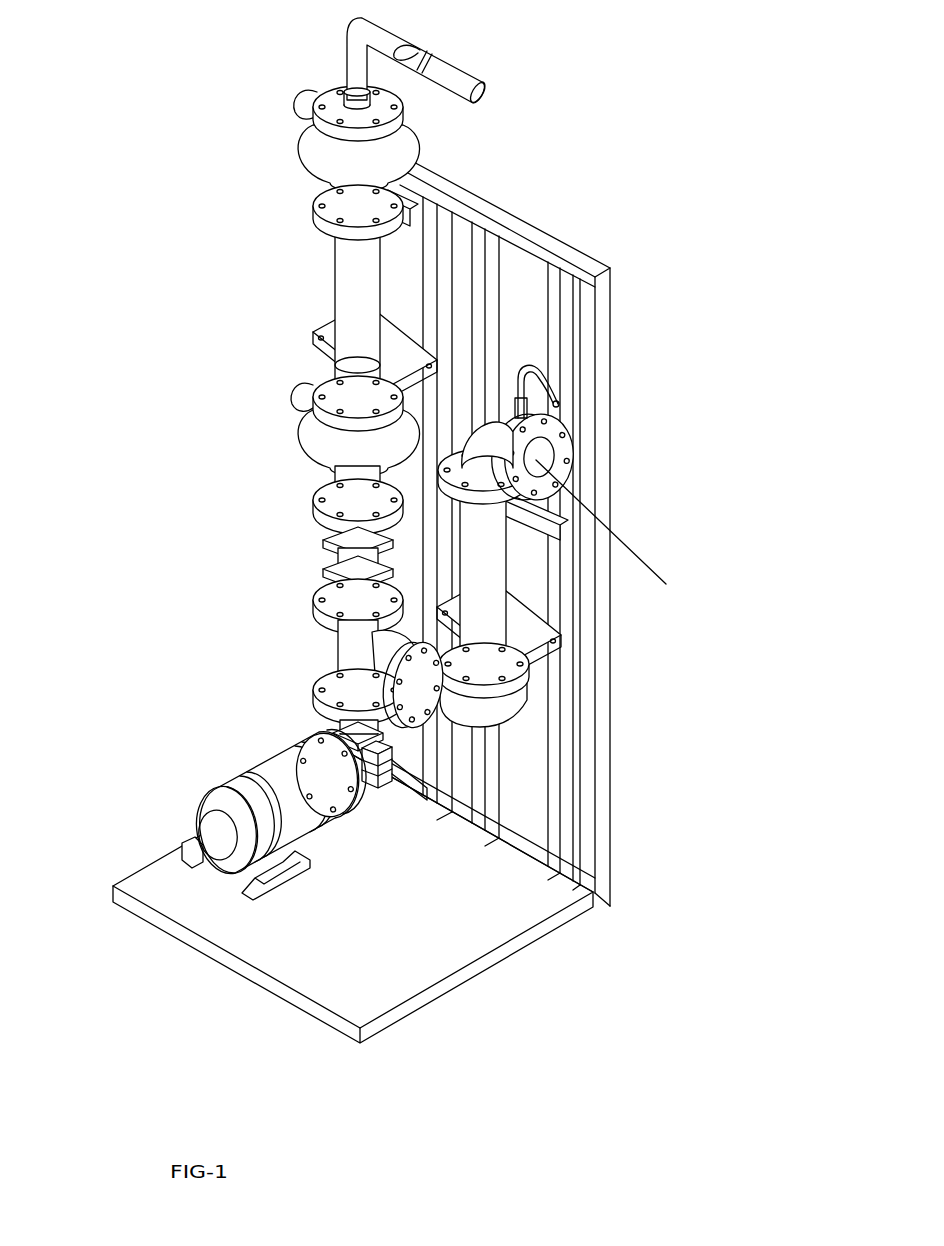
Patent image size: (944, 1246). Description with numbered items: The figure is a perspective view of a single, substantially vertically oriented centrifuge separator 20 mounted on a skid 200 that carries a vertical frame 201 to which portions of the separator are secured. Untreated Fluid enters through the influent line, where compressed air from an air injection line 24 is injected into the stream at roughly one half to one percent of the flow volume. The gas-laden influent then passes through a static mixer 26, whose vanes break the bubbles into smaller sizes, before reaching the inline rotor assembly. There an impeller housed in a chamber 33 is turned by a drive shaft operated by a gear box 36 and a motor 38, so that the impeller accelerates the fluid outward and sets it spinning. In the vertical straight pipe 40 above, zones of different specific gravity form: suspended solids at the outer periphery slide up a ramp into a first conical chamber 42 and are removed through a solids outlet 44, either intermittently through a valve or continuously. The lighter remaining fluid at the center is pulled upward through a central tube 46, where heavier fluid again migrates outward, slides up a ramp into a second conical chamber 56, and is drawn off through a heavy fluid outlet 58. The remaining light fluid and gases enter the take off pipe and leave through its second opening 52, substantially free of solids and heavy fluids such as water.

The centrifuge separator 20 is at (471, 615).
The air injection line 24 is at (540, 376).
The static mixer 26 is at (500, 595).
The chamber 33 is at (333, 557).
The gear box 36 is at (352, 742).
The motor 38 is at (297, 763).
The vertical straight pipe 40 is at (355, 490).
The first conical chamber 42 is at (320, 442).
The solids outlet 44 is at (293, 387).
The central tube 46 is at (360, 298).
The second opening 52 is at (485, 91).
The second conical chamber 56 is at (323, 138).
The heavy fluid outlet 58 is at (295, 95).
The skid 200 is at (365, 1003).
The frame 201 is at (610, 862).